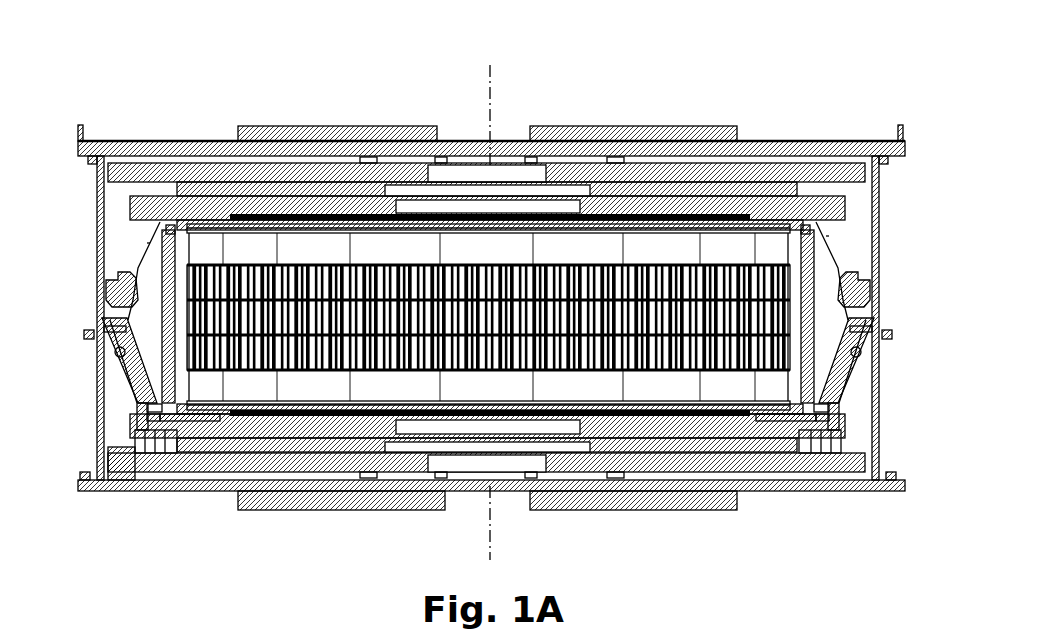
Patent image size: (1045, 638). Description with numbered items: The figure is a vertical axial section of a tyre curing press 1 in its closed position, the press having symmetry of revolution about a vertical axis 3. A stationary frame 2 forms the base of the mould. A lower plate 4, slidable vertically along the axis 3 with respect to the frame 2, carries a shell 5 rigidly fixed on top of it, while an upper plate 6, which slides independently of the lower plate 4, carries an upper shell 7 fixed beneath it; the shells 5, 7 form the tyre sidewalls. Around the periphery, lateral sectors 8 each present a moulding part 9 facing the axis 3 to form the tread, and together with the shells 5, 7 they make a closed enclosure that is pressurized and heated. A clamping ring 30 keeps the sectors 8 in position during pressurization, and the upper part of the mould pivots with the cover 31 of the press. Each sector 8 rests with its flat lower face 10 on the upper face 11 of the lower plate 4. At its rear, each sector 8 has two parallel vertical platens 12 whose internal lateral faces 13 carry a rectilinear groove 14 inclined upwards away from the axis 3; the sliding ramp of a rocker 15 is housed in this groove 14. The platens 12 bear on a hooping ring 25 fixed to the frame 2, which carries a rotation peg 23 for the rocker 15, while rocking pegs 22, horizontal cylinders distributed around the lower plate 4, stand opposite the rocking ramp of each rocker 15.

The press 1 is at (127, 84).
The frame 2 is at (578, 472).
The vertical axis 3 is at (488, 92).
The lower plate 4 is at (668, 440).
The shell 5 is at (740, 425).
The upper plate 6 is at (703, 203).
The upper shell 7 is at (748, 230).
The lateral sector 8 is at (146, 243).
The moulding part 9 is at (204, 296).
The lower face 10 is at (153, 426).
The upper face 11 is at (169, 426).
The vertical platen 12 is at (157, 267).
The internal lateral face 13 is at (155, 313).
The rectilinear groove 14 is at (152, 405).
The rocker 15 is at (110, 327).
The rocking peg 22 is at (838, 448).
The rotation peg 23 is at (123, 357).
The hooping ring 25 is at (113, 455).
The clamping ring 30 is at (128, 290).
The cover 31 is at (268, 132).